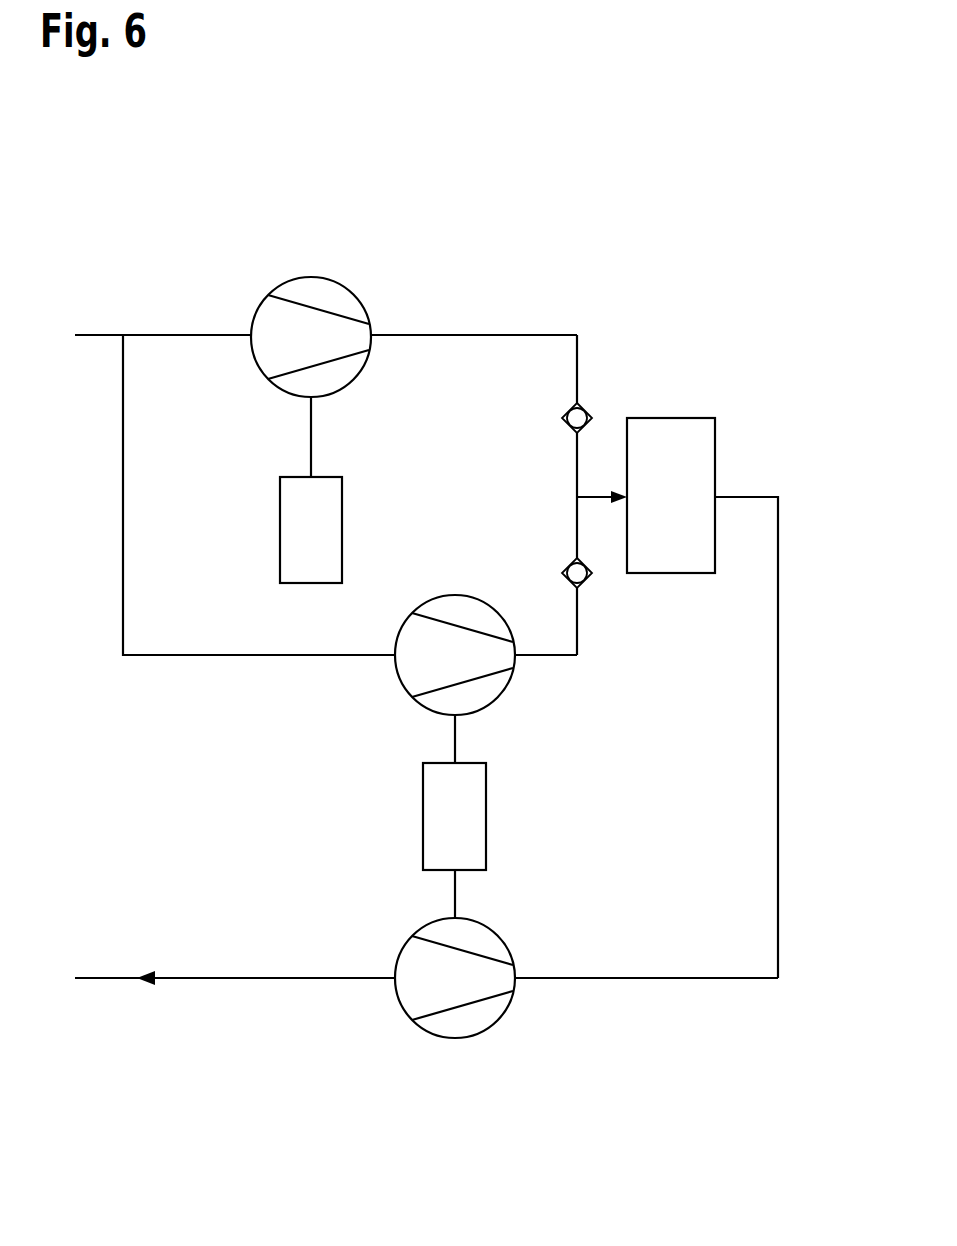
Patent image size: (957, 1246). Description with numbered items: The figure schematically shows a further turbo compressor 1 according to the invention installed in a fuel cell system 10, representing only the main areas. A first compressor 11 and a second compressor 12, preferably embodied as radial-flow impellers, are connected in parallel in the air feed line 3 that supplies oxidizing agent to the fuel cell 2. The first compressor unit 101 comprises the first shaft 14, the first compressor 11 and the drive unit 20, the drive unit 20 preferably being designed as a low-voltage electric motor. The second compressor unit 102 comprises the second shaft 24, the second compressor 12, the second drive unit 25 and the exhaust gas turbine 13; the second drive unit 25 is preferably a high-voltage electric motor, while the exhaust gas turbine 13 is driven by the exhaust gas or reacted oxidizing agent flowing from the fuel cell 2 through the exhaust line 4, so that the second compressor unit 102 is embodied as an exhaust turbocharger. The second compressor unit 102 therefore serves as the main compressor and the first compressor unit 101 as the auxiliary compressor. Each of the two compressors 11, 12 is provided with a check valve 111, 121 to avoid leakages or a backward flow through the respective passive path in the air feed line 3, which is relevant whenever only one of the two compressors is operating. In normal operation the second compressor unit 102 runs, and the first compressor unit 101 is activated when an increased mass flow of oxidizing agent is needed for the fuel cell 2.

The hydrogen compression arrangement 1 is at (657, 250).
The fuel cell 2 is at (672, 418).
The air feed line 3 is at (188, 334).
The exhaust line 4 is at (777, 737).
The first compression stage line 10 is at (520, 306).
The first compressor 11 is at (311, 277).
The second compressor 12 is at (457, 596).
The exhaust gas turbine 13 is at (457, 1040).
The first shaft 14 is at (310, 435).
The drive unit 20 is at (280, 528).
The second shaft 24 is at (456, 738).
The second drive unit 25 is at (486, 815).
The first compressor unit 101 is at (272, 612).
The second compressor unit 102 is at (518, 1108).
The check valve 111 is at (568, 430).
The check valve 121 is at (568, 563).